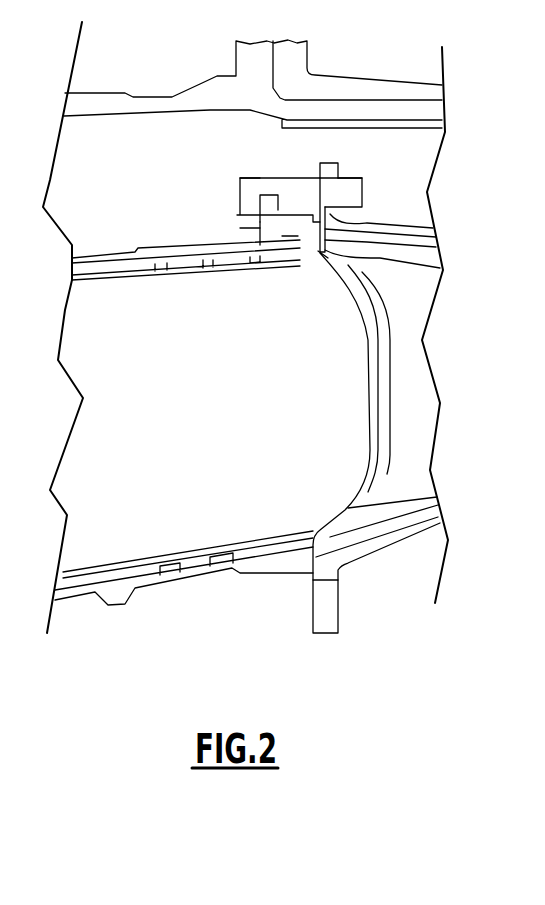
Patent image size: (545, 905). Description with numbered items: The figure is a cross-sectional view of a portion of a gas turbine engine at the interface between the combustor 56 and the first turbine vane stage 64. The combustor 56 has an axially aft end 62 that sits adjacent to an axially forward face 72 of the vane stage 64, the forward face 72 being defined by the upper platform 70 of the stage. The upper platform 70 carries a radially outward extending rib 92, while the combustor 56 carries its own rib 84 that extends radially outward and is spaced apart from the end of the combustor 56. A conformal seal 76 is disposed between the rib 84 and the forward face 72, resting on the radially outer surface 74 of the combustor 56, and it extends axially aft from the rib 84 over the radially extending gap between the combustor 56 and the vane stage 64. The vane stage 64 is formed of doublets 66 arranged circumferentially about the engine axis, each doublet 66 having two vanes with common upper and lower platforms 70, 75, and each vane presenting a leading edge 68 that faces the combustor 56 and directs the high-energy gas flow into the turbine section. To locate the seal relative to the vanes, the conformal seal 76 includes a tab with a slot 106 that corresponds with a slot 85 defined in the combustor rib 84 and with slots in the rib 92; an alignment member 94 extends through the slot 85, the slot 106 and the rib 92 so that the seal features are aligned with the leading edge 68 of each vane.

The combustor 56 is at (192, 592).
The axially aft end 62 is at (330, 274).
The first turbine vane stage 64 is at (392, 582).
The doublet 66 is at (420, 283).
The leading edge 68 is at (359, 407).
The upper platform 70 is at (393, 232).
The axially forward face 72 is at (306, 210).
The radially outer surface 74 is at (282, 222).
The lower platform 75 is at (367, 538).
The conformal seal 76 is at (305, 228).
The rib 84 is at (258, 228).
The slot 85 is at (244, 199).
The radially outward extending rib 92 is at (340, 170).
The alignment member 94 is at (247, 184).
The slot 106 is at (293, 188).